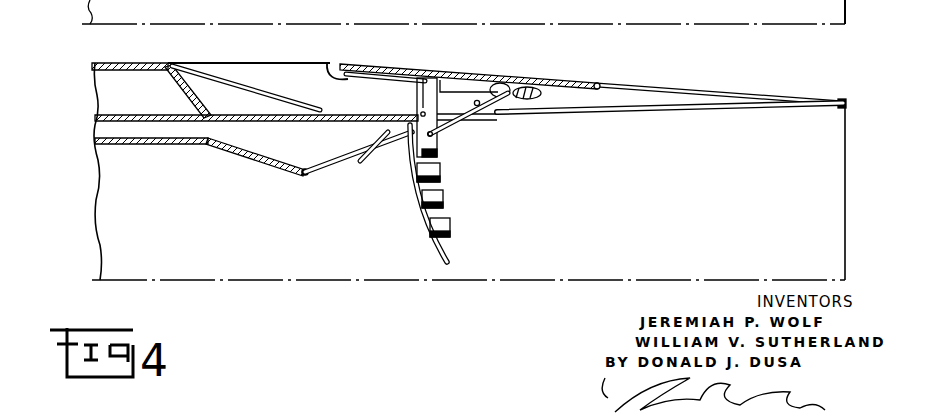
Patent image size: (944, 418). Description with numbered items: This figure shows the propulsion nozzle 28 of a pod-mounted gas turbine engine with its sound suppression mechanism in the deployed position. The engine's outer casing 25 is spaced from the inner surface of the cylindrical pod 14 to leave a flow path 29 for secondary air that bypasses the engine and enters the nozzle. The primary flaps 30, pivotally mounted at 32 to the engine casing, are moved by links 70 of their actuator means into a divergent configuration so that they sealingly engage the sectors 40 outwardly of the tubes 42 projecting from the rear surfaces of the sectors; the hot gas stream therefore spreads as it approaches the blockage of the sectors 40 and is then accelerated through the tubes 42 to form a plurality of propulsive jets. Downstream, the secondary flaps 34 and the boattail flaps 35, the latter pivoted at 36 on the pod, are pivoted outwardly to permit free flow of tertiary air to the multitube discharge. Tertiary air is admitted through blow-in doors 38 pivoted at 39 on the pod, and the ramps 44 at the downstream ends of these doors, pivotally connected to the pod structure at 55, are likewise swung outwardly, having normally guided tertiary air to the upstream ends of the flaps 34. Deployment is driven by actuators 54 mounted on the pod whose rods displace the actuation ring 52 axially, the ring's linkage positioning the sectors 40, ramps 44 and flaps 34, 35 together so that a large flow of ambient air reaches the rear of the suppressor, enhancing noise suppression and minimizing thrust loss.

The pod 14 is at (423, 80).
The outer casing 25 is at (185, 147).
The nozzle 28 is at (735, 66).
The flow path 29 is at (143, 144).
The flaps 30 is at (342, 164).
The pivot 32 is at (310, 175).
The flaps 34 is at (727, 113).
The boattail flaps 35 is at (750, 92).
The pivot 36 is at (603, 81).
The blow-in doors 38 is at (272, 92).
The pivot 39 is at (168, 67).
The sectors 40 is at (418, 190).
The tubes 42 is at (443, 175).
The ramps 44 is at (403, 88).
The actuation ring 52 is at (553, 80).
The actuators 54 is at (480, 87).
The pivot 55 is at (345, 66).
The links 70 is at (372, 141).